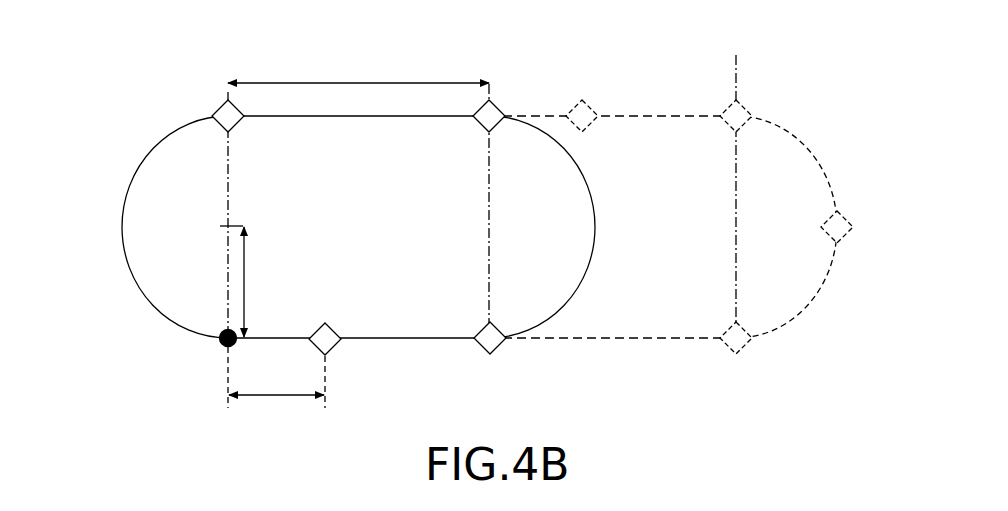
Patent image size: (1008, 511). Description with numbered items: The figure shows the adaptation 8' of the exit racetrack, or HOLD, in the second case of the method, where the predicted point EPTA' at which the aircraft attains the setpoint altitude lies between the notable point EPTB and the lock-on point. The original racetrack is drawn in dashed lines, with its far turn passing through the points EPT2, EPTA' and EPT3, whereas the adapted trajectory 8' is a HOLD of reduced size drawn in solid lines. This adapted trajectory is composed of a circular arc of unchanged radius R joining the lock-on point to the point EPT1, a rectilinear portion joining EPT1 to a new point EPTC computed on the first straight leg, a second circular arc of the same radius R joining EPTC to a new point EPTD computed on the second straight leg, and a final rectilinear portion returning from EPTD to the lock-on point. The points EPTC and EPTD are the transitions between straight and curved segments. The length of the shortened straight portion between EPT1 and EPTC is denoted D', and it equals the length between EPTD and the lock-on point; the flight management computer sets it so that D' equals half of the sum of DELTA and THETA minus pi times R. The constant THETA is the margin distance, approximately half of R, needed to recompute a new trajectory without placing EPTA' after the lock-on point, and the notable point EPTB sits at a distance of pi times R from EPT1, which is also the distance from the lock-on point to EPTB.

The adaptation of the exit HOLD 8' is at (435, 196).
The point EPT1 is at (206, 100).
The point EPTC is at (515, 101).
The notable point EPTB is at (608, 103).
The point EPT2 is at (766, 107).
The point EPTA' is at (865, 217).
The point EPT3 is at (771, 347).
The point EPTD is at (522, 352).
The distance D' is at (358, 63).
The radius R is at (246, 281).
The constant THETA is at (276, 387).